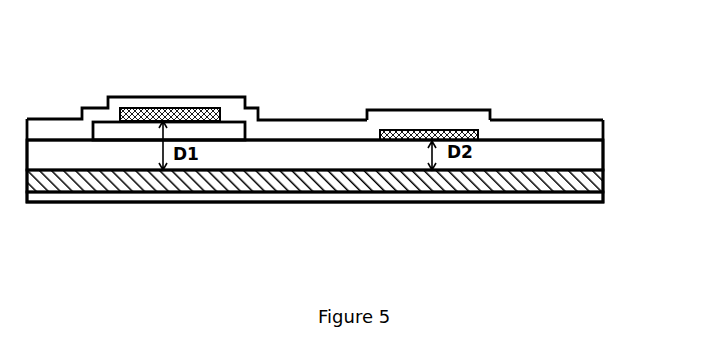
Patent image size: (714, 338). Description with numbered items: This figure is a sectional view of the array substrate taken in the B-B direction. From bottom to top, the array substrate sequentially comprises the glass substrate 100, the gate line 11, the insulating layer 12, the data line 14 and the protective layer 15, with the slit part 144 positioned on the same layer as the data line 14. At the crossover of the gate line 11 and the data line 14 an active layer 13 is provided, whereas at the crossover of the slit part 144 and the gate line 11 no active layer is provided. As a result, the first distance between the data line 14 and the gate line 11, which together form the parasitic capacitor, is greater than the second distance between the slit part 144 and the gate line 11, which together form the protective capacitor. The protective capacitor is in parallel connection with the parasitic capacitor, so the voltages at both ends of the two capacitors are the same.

The glass substrate 100 is at (532, 202).
The gate line 11 is at (347, 194).
The insulating layer 12 is at (255, 158).
The active layer 13 is at (247, 108).
The data line 14 is at (173, 113).
The protective layer 15 is at (412, 122).
The slit line of data line 144 is at (467, 128).